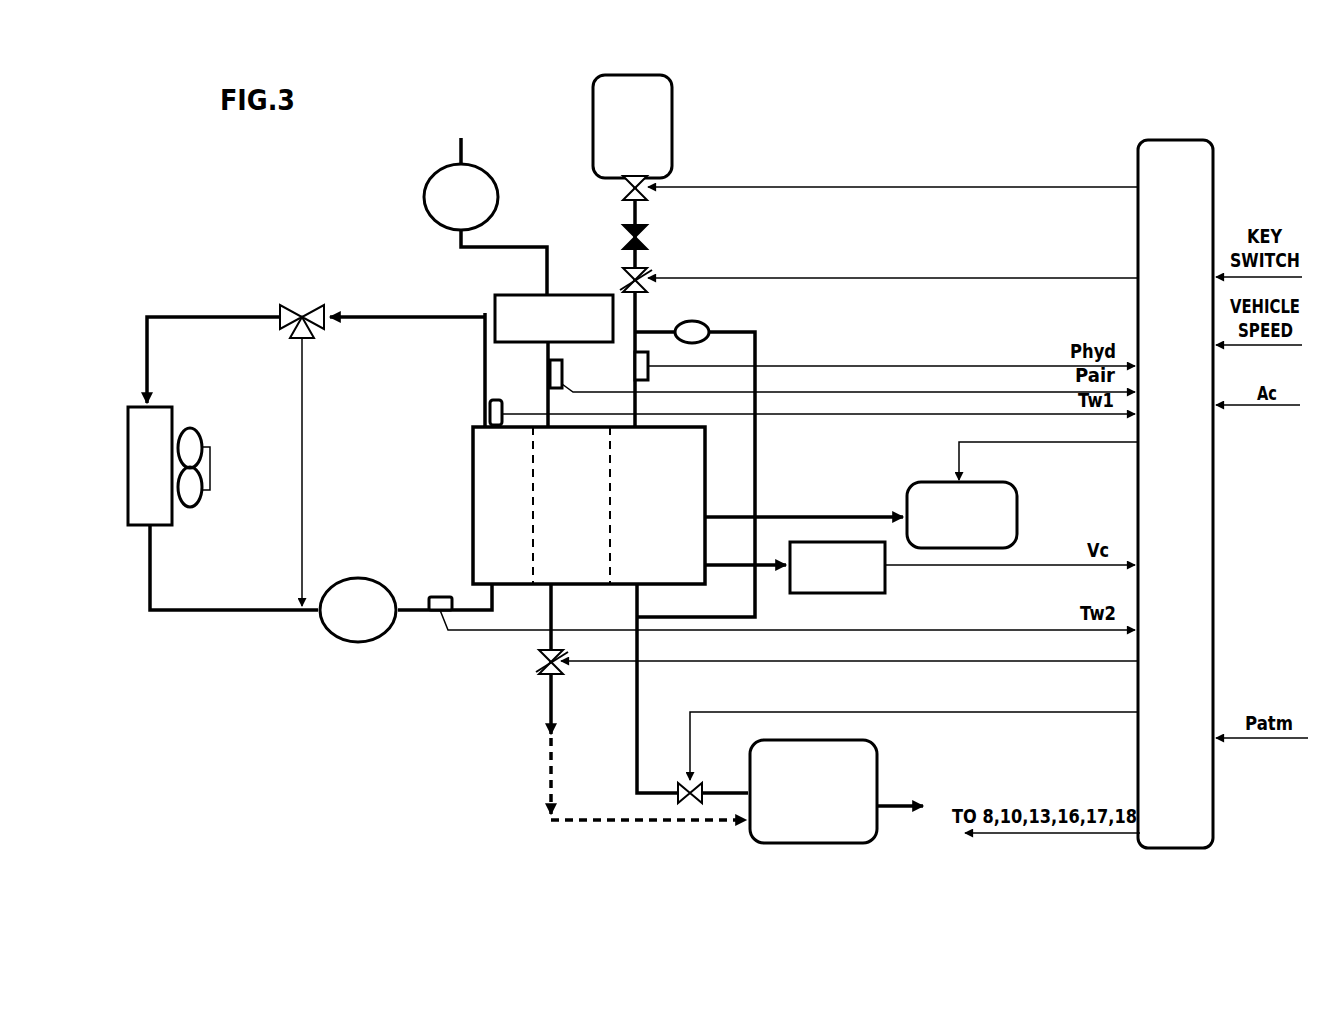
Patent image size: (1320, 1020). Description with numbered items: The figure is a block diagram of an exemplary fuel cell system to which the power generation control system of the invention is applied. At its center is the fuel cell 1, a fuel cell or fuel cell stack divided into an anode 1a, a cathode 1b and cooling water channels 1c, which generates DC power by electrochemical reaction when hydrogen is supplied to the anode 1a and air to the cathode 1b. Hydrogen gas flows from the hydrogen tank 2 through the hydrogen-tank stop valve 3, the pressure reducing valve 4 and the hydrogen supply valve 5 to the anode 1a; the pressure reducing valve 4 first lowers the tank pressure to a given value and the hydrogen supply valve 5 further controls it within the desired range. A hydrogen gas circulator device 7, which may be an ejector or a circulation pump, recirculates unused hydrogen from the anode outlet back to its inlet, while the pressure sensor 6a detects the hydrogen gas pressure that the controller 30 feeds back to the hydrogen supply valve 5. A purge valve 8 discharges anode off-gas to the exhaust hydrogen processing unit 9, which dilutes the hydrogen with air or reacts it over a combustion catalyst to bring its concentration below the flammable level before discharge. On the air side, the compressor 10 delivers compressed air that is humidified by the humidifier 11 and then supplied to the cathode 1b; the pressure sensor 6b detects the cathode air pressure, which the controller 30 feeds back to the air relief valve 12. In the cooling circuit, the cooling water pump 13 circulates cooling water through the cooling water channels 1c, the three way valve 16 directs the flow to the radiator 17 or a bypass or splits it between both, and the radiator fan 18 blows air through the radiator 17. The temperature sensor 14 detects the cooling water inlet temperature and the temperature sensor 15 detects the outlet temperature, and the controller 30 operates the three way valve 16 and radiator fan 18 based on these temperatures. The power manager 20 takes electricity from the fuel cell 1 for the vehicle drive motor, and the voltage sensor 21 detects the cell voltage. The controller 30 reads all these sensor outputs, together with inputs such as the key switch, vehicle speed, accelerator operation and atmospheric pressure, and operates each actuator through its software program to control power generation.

The fuel cell 1 is at (471, 480).
The anode 1a is at (703, 459).
The cathode 1b is at (587, 574).
The cooling water channels 1c is at (520, 574).
The hydrogen tank 2 is at (673, 120).
The hydrogen-tank stop valve 3 is at (642, 193).
The pressure reducing valve 4 is at (646, 238).
The hydrogen supply valve 5 is at (646, 274).
The pressure sensor 6a is at (648, 364).
The pressure sensor 6b is at (562, 370).
The hydrogen gas circulator device 7 is at (704, 323).
The purge valve 8 is at (697, 782).
The exhaust hydrogen processing unit 9 is at (877, 752).
The compressor 10 is at (487, 180).
The humidifier 11 is at (583, 295).
The air relief valve 12 is at (540, 660).
The cooling water pump 13 is at (352, 642).
The temperature sensor 14 is at (430, 597).
The temperature sensor 15 is at (498, 400).
The three way valve 16 is at (302, 305).
The radiator 17 is at (130, 407).
The radiator fan 18 is at (190, 508).
The power manager 20 is at (1018, 513).
The voltage sensor 21 is at (886, 582).
The controller 30 is at (1137, 152).